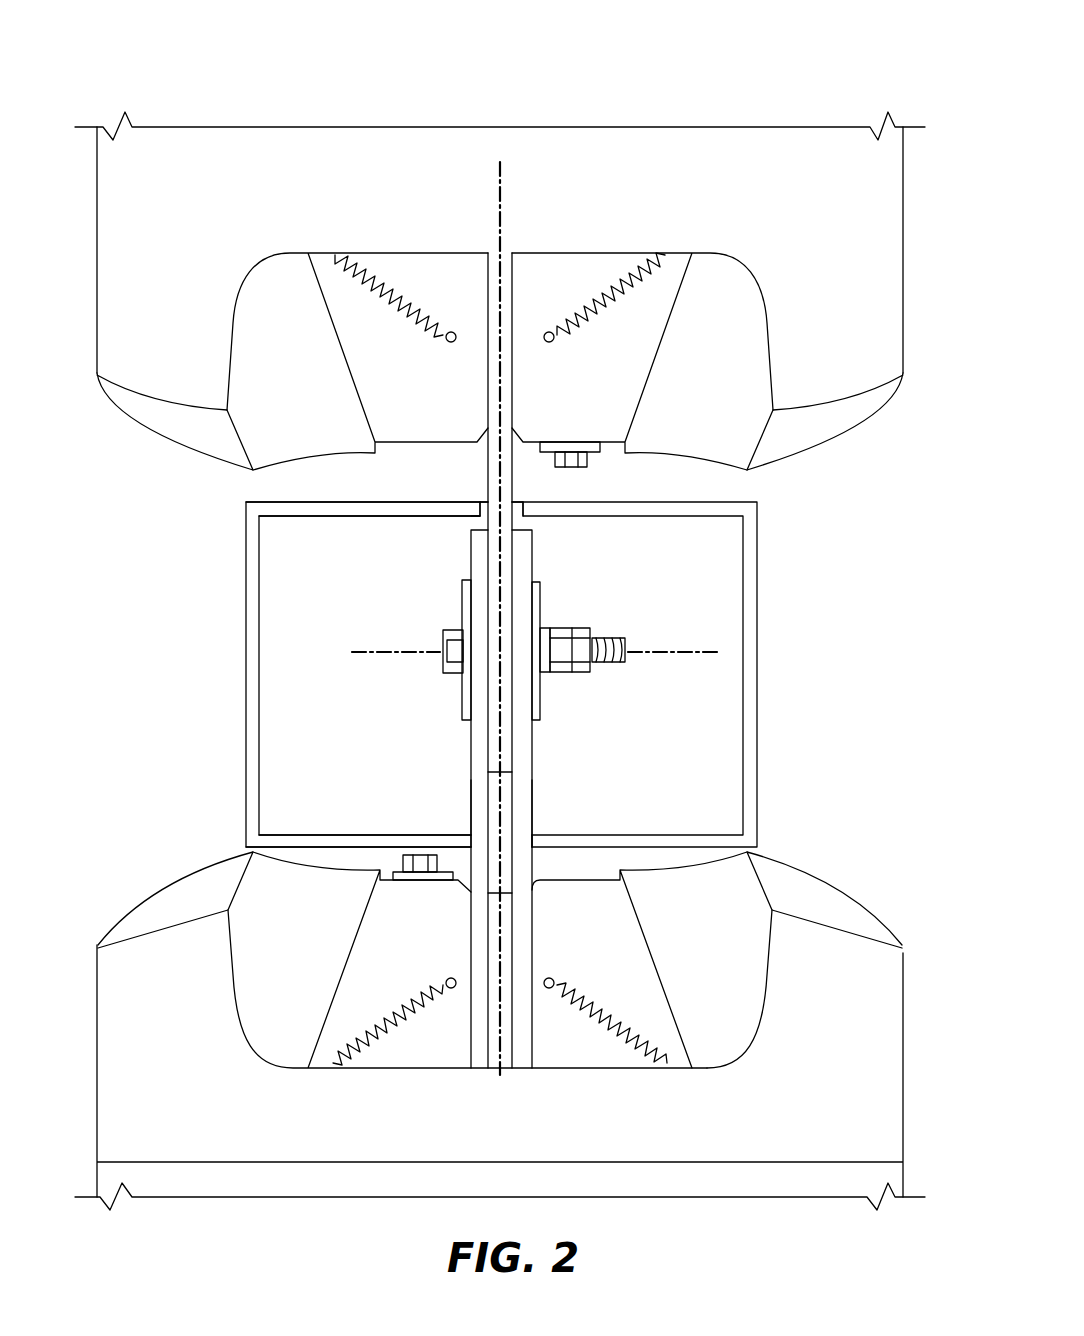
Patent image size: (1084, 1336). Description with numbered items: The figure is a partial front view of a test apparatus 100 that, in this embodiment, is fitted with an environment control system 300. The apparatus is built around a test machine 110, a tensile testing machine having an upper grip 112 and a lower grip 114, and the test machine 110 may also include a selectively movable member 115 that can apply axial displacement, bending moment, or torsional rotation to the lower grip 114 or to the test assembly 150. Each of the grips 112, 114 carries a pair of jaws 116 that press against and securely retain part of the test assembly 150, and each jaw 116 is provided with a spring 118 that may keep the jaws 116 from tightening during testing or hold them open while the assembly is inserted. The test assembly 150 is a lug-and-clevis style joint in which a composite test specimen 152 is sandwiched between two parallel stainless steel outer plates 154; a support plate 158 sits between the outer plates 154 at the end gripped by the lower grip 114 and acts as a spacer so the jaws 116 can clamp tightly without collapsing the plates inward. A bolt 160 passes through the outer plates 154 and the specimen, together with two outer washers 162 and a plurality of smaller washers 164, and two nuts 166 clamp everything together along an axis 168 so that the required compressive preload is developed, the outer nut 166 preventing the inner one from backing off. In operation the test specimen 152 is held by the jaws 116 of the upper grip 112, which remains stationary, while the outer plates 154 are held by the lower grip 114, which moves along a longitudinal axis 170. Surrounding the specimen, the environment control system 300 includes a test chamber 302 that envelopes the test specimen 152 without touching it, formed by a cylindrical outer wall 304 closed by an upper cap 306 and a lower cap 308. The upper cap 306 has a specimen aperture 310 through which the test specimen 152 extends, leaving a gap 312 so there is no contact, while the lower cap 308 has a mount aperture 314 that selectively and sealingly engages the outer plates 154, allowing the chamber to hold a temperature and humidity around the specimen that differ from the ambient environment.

The test apparatus 100 is at (640, 56).
The test machine 110 is at (338, 123).
The upper grip 112 is at (800, 457).
The lower grip 114 is at (800, 867).
The selectively movable member 115 is at (775, 1162).
The jaws 116 is at (447, 400).
The spring 118 is at (383, 258).
The test assembly 150 is at (537, 550).
The test specimen 152 is at (487, 497).
The outer plates 154 is at (471, 805).
The support plate 158 is at (500, 1068).
The bolt 160 is at (455, 630).
The outer washers 162 is at (462, 697).
The smaller washers 164 is at (547, 627).
The nuts 166 is at (577, 630).
The axis 168 is at (698, 647).
The longitudinal axis 170 is at (505, 180).
The environment control system 300 is at (773, 666).
The test chamber 302 is at (750, 738).
The cylindrical outer wall 304 is at (248, 630).
The upper cap 306 is at (330, 510).
The lower cap 308 is at (347, 842).
The specimen aperture 310 is at (483, 515).
The gap 312 is at (519, 497).
The mount aperture 314 is at (535, 848).